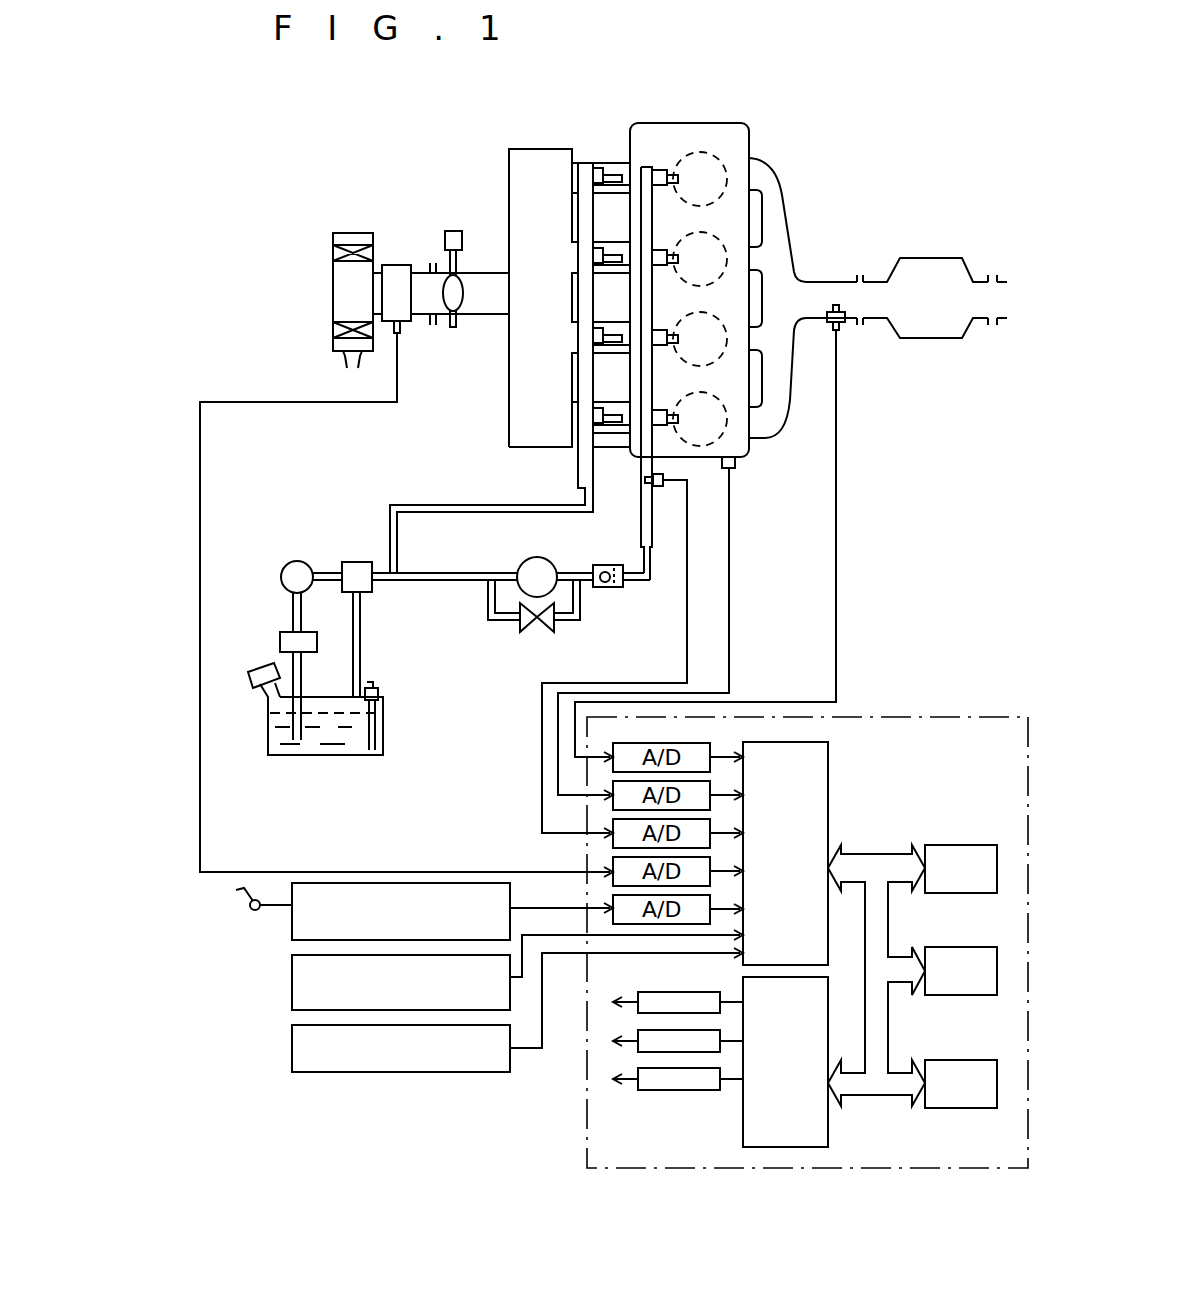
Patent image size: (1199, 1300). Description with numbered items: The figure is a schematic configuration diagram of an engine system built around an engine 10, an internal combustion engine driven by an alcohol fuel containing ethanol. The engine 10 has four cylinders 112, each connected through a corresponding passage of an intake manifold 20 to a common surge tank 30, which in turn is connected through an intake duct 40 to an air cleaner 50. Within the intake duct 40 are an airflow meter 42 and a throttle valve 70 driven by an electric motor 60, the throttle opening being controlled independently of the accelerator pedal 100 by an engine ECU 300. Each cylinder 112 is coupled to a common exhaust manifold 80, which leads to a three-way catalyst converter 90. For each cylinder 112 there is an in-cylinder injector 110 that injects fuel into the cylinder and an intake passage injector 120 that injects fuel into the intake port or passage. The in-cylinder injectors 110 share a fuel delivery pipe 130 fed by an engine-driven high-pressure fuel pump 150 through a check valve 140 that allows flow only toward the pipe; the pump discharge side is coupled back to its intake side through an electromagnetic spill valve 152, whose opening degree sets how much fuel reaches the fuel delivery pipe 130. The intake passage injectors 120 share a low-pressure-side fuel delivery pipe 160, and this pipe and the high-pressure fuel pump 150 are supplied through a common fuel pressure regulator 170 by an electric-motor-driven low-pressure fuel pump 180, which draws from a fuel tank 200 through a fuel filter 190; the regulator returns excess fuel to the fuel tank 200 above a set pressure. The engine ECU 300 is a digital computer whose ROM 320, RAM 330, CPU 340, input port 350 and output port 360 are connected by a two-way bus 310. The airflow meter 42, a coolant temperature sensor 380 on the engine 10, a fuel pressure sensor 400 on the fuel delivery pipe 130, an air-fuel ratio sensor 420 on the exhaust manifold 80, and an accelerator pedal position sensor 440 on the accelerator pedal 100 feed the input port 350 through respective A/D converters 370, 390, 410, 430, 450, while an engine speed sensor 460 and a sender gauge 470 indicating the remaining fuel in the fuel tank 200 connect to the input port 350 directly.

The engine 10 is at (748, 122).
The intake manifold 20 is at (578, 163).
The surge tank 30 is at (527, 149).
The intake duct 40 is at (483, 273).
The airflow meter 42 is at (397, 265).
The air cleaner 50 is at (333, 293).
The electric motor 60 is at (447, 231).
The throttle valve 70 is at (457, 303).
The exhaust manifold 80 is at (787, 198).
The three-way catalyst converter 90 is at (930, 258).
The accelerator pedal 100 is at (240, 897).
The in-cylinder injector 110 is at (689, 299).
The cylinder 112 is at (718, 440).
The intake passage injector 120 is at (593, 413).
The fuel delivery pipe 130 is at (640, 167).
The check valve 140 is at (608, 589).
The high-pressure fuel pump 150 is at (522, 564).
The electromagnetic spill valve 152 is at (537, 634).
The low-pressure-side fuel delivery pipe 160 is at (578, 472).
The fuel pressure regulator 170 is at (357, 562).
The low-pressure fuel pump 180 is at (300, 561).
The fuel filter 190 is at (283, 634).
The fuel tank 200 is at (323, 757).
The engine ECU 300 is at (983, 705).
The two-way bus 310 is at (872, 853).
The ROM 320 is at (945, 845).
The RAM 330 is at (945, 947).
The CPU 340 is at (945, 1060).
The input port 350 is at (828, 765).
The output port 360 is at (828, 1128).
The A/D converter 370 is at (612, 861).
The coolant temperature sensor 380 is at (735, 470).
The A/D converter 390 is at (612, 786).
The fuel pressure sensor 400 is at (663, 488).
The A/D converter 410 is at (612, 823).
The air-fuel ratio sensor 420 is at (844, 330).
The A/D converter 430 is at (612, 748).
The accelerator pedal position sensor 440 is at (292, 918).
The A/D converter 450 is at (612, 898).
The engine speed sensor 460 is at (292, 982).
The sender gauge 470 is at (292, 1048).